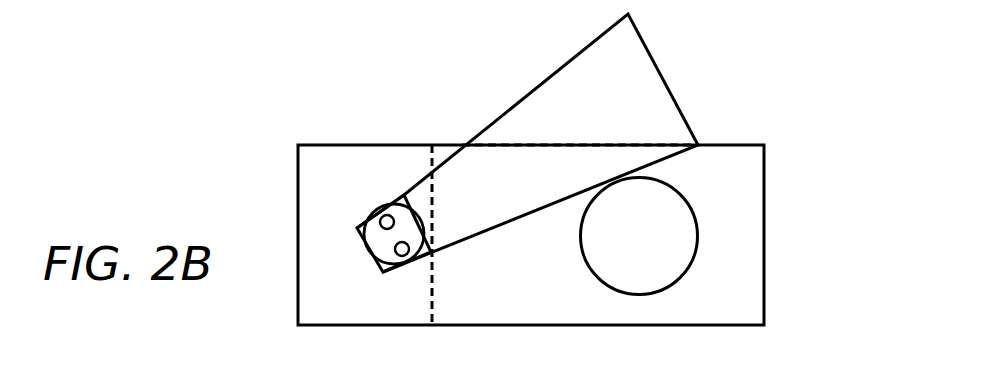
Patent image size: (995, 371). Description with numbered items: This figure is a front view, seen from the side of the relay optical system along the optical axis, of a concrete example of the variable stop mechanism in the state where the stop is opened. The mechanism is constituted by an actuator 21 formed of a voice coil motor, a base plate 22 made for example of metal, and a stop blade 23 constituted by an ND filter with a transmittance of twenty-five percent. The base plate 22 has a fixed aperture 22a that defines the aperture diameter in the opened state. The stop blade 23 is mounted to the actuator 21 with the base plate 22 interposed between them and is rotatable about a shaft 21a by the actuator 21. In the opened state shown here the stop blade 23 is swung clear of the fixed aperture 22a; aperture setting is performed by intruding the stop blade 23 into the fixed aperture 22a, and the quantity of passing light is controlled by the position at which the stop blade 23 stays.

The actuator 21 is at (332, 213).
The shaft 21a is at (405, 226).
The base plate 22 is at (753, 175).
The fixed aperture 22a is at (668, 242).
The stop blade 23 is at (652, 88).